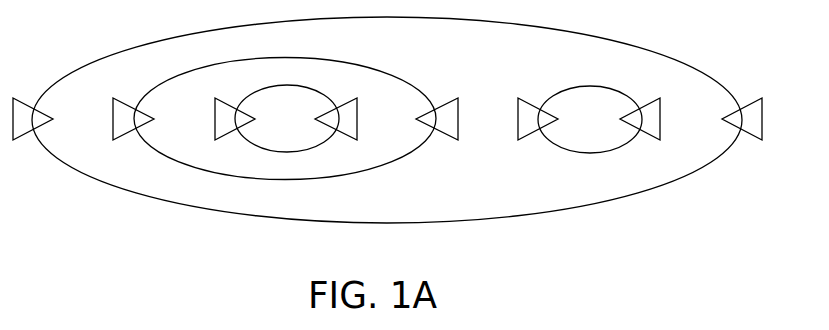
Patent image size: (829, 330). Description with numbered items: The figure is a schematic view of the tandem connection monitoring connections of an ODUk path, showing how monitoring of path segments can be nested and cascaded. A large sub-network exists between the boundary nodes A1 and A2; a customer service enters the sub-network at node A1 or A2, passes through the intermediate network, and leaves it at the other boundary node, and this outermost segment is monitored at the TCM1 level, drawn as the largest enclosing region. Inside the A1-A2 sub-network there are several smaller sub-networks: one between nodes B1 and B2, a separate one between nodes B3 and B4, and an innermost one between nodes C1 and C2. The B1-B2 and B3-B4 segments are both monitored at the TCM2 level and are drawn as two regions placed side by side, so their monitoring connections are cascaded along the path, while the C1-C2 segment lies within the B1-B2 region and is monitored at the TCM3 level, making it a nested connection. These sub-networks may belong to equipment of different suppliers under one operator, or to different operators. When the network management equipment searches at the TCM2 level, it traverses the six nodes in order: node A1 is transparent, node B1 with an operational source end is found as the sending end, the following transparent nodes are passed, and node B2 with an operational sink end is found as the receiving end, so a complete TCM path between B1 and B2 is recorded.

The TCM1 level monitoring connection TCM1 is at (387, 120).
The TCM2 level monitoring connection TCM2 is at (388, 119).
The TCM3 level monitoring connection TCM3 is at (287, 118).
The node A1 is at (33, 119).
The node A2 is at (742, 119).
The node B1 is at (133, 119).
The node B2 is at (437, 119).
The node B3 is at (538, 119).
The node B4 is at (640, 119).
The node C1 is at (235, 119).
The node C2 is at (336, 119).